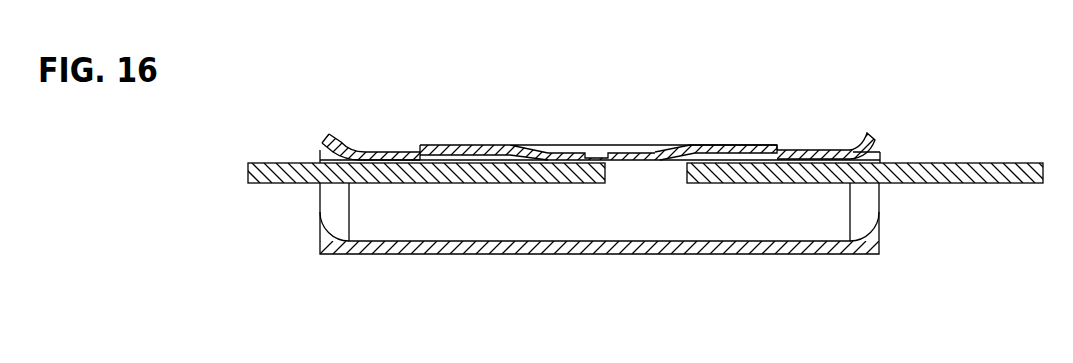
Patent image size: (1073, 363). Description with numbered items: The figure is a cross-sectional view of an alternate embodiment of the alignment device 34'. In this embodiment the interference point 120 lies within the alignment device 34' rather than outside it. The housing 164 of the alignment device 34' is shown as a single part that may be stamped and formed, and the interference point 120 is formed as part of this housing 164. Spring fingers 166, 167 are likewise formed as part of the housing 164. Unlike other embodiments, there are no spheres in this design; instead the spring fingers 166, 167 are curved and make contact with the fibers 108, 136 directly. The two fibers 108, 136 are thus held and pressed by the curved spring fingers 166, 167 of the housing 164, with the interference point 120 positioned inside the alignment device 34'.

The fiber 108 is at (262, 170).
The interference point 120 is at (338, 148).
The spring finger 166 is at (545, 160).
The spring finger 167 is at (658, 162).
The alignment device 34' is at (810, 69).
The fiber 136 is at (1000, 168).
The housing 164 is at (858, 246).